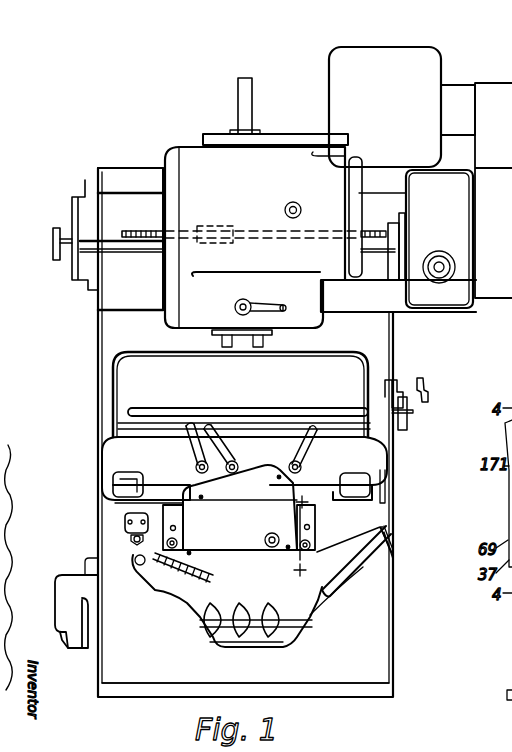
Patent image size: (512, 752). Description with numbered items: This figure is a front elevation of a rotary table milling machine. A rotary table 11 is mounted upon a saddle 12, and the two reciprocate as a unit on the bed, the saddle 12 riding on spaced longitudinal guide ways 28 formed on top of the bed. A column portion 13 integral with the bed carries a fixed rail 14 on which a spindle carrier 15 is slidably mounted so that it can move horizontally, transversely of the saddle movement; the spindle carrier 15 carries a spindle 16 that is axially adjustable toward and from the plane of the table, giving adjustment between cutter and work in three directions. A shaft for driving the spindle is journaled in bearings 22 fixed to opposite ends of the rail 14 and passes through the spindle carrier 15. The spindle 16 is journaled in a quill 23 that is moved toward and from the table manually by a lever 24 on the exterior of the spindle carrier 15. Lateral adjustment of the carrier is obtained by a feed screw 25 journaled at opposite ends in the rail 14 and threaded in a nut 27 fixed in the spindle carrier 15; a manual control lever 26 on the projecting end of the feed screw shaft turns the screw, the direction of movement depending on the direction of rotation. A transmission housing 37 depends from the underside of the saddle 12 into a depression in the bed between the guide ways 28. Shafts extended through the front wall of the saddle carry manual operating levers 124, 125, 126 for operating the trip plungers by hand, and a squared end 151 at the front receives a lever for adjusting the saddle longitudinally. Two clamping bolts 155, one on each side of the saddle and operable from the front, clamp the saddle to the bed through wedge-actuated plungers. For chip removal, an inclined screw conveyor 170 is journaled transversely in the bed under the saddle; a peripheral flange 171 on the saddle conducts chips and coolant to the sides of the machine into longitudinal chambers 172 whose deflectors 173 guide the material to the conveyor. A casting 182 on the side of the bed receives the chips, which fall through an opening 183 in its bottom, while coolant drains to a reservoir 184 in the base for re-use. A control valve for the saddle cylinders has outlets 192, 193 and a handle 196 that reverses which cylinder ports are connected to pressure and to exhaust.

The rotary table 11 is at (262, 425).
The saddle 12 is at (112, 452).
The column portion 13 is at (310, 538).
The fixed rail 14 is at (116, 171).
The spindle carrier 15 is at (194, 152).
The spindle 16 is at (223, 340).
The bearings 22 is at (72, 258).
The quill 23 is at (267, 333).
The lever 24 is at (253, 307).
The feed screw 25 is at (138, 230).
The manual control lever 26 is at (44, 258).
The nut 27 is at (220, 227).
The longitudinal guide ways 28 is at (385, 512).
The transmission housing 37 is at (312, 527).
The manual operating lever 124 is at (192, 440).
The manual operating lever 125 is at (232, 458).
The manual operating lever 126 is at (303, 423).
The squared end 151 is at (130, 538).
The clamping bolt 155 is at (185, 541).
The screw conveyor 170 is at (250, 633).
The peripheral flange 171 is at (360, 455).
The longitudinal chambers 172 is at (360, 542).
The deflectors 173 is at (363, 567).
The casting 182 is at (60, 597).
The opening 183 is at (67, 640).
The reservoir 184 is at (373, 670).
The outlet 192 is at (398, 383).
The outlet 193 is at (405, 427).
The handle 196 is at (425, 383).